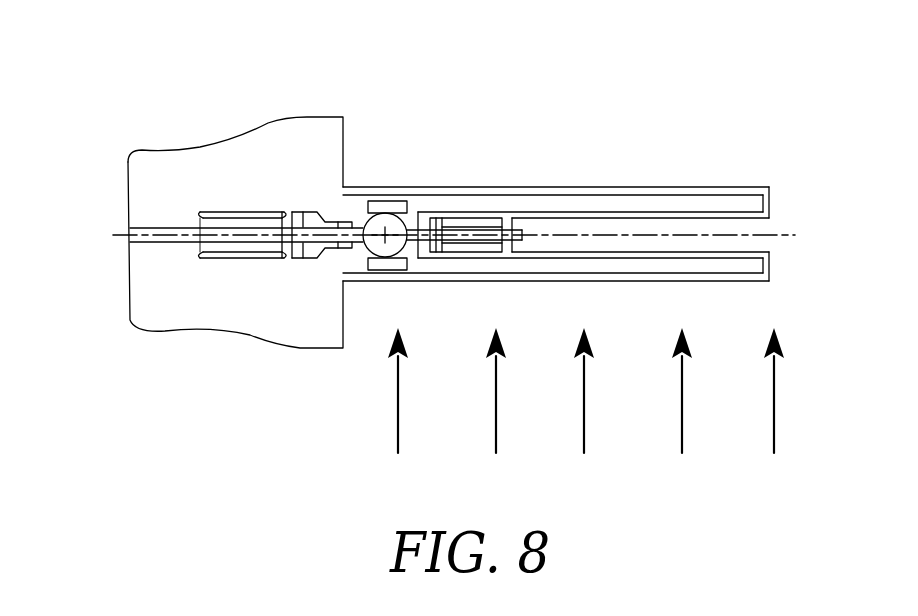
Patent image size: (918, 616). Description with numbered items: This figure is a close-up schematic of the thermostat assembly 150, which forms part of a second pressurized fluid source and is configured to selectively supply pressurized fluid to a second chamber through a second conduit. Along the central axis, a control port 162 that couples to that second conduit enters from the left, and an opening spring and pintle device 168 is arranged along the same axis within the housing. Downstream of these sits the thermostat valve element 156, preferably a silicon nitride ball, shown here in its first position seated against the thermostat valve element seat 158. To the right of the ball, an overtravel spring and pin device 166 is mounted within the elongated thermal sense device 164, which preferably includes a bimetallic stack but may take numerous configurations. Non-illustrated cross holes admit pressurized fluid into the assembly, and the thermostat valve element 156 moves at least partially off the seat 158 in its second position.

The thermostat assembly 150 is at (119, 63).
The thermostat valve element 156 is at (405, 201).
The thermostat valve element seat 158 is at (362, 212).
The control port 162 is at (129, 228).
The thermal sense device 164 is at (625, 187).
The overtravel spring and pin device 166 is at (473, 216).
The opening spring and pintle device 168 is at (243, 254).